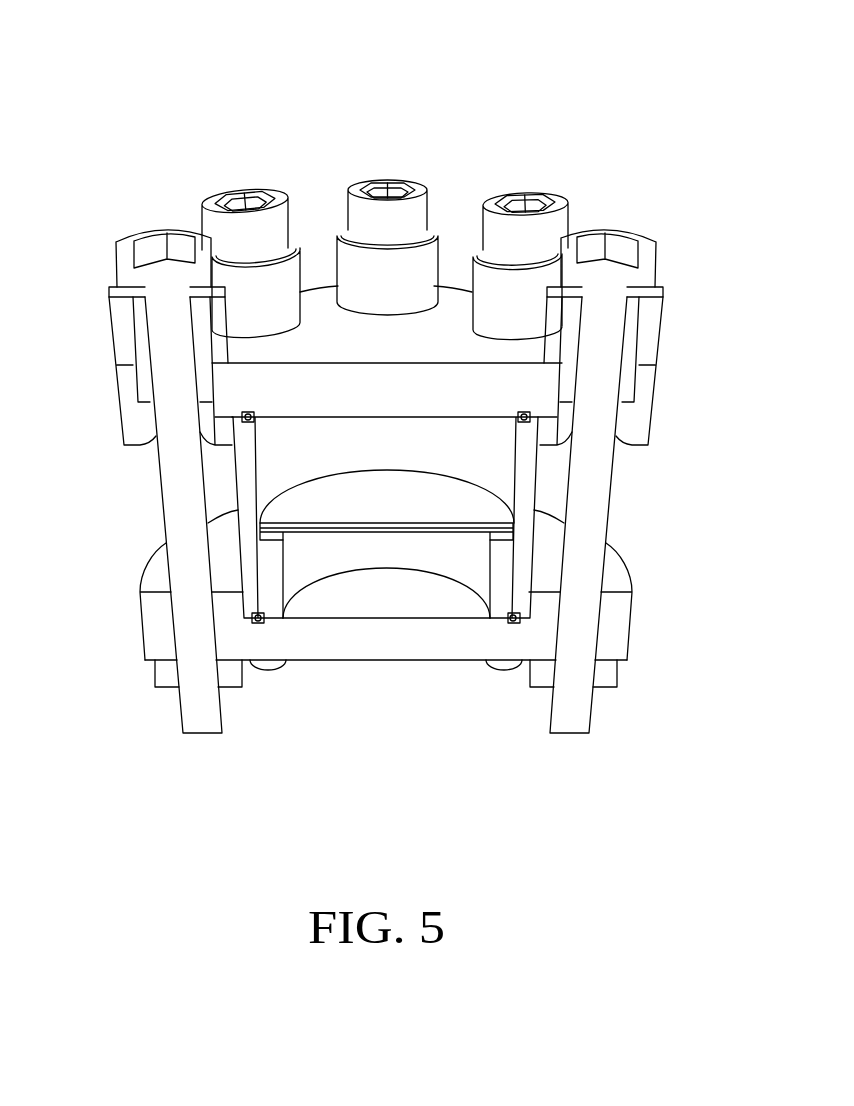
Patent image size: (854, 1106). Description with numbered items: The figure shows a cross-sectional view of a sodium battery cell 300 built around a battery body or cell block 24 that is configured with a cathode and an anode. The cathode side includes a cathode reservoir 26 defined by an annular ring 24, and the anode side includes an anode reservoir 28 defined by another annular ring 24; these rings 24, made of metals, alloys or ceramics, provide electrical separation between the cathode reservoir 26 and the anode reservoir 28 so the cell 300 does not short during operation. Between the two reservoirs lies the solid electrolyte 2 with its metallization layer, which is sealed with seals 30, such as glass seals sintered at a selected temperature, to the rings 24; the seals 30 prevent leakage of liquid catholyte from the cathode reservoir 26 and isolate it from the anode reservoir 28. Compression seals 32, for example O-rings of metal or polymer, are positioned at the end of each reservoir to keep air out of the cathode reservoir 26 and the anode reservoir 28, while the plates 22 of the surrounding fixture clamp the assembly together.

The sodium battery 300 is at (387, 404).
The plate 22 is at (503, 385).
The cathode reservoir 26 is at (493, 451).
The solid electrolyte 2 is at (478, 502).
The seals 30 is at (503, 537).
The annular ring 24 is at (515, 573).
The anode reservoir 28 is at (392, 568).
The compression seals 32 is at (247, 419).